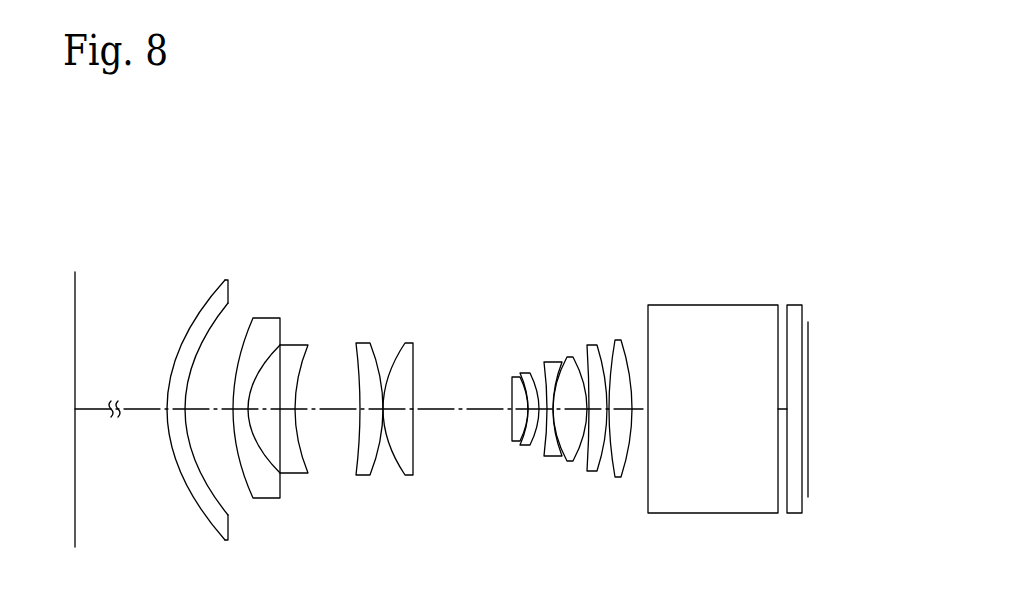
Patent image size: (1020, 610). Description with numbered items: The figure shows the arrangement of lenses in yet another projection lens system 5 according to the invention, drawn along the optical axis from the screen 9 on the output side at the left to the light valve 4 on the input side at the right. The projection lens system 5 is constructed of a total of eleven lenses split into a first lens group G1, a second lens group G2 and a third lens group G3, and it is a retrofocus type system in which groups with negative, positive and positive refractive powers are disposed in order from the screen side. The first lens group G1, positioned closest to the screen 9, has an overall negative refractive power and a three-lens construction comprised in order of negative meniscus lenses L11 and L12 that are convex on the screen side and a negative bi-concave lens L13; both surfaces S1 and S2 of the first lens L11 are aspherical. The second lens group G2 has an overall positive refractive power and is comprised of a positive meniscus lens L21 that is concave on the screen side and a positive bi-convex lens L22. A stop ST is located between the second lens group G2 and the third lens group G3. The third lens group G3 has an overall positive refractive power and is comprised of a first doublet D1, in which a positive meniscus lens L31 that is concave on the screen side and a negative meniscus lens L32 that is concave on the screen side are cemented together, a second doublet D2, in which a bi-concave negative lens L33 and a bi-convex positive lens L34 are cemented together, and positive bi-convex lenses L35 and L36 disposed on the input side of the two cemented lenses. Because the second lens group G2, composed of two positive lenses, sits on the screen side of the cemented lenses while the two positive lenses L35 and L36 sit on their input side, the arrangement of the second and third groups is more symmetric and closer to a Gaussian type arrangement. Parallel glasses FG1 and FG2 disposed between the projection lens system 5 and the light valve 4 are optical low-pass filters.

The screen 9 is at (75, 336).
The projection lens system 5 is at (195, 159).
The first lens group G1 is at (295, 207).
The second lens group G2 is at (457, 207).
The third lens group G3 is at (708, 207).
The negative meniscus lens L11 is at (207, 406).
The negative meniscus lens L12 is at (265, 330).
The negative bi-concave lens L13 is at (290, 347).
The positive meniscus lens L21 is at (360, 345).
The positive bi-convex lens L22 is at (406, 345).
The positive meniscus lens L31 is at (515, 383).
The negative meniscus lens L32 is at (525, 377).
The bi-concave negative lens L33 is at (548, 365).
The bi-convex positive lens L34 is at (569, 360).
The positive bi-convex lens L35 is at (593, 348).
The positive bi-convex lens L36 is at (620, 343).
The surface of first lens S1 is at (203, 523).
The surface of first lens S2 is at (222, 502).
The stop ST is at (492, 385).
The first doublet D1 is at (506, 391).
The second doublet D2 is at (580, 375).
The parallel glass FG1 is at (717, 328).
The parallel glass FG2 is at (793, 315).
The light valve 4 is at (810, 367).